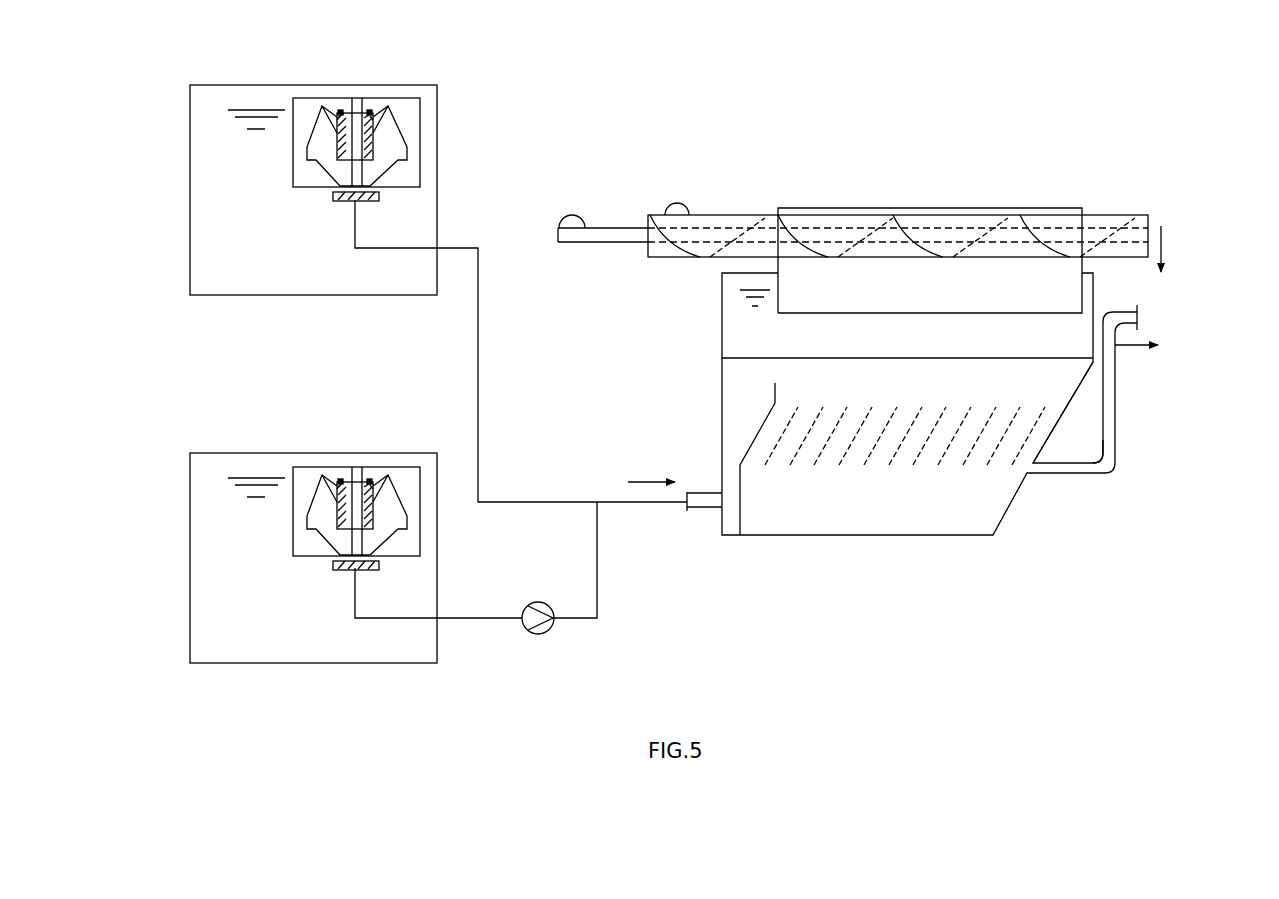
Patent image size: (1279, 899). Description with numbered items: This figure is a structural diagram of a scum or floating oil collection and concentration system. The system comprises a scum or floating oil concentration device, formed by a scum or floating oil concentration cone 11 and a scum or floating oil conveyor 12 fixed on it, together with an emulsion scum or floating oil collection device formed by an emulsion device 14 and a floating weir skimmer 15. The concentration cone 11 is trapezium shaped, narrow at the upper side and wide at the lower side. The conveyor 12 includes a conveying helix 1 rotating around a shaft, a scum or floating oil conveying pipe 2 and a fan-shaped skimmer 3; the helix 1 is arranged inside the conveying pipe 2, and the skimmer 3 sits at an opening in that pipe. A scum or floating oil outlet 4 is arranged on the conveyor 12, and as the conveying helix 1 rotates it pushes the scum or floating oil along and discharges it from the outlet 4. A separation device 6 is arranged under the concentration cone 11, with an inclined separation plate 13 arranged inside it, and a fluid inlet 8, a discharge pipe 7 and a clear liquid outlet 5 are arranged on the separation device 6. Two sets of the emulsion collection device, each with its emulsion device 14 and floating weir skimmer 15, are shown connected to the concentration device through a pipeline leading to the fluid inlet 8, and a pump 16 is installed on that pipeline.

The conveying helix 1 is at (632, 227).
The scum or floating oil conveying pipe 2 is at (725, 212).
The skimmer 3 is at (855, 208).
The scum or floating oil outlet 4 is at (1145, 212).
The clear liquid outlet 5 is at (1143, 313).
The separation device 6 is at (1050, 445).
The discharge pipe 7 is at (1120, 433).
The fluid inlet 8 is at (718, 495).
The scum or floating oil concentration cone 11 is at (745, 330).
The scum or floating oil conveyor 12 is at (915, 203).
The inclined separation plate 13 is at (800, 447).
The emulsion device 14 is at (255, 85).
The floating weir skimmer 15 is at (382, 98).
The pump 16 is at (528, 633).